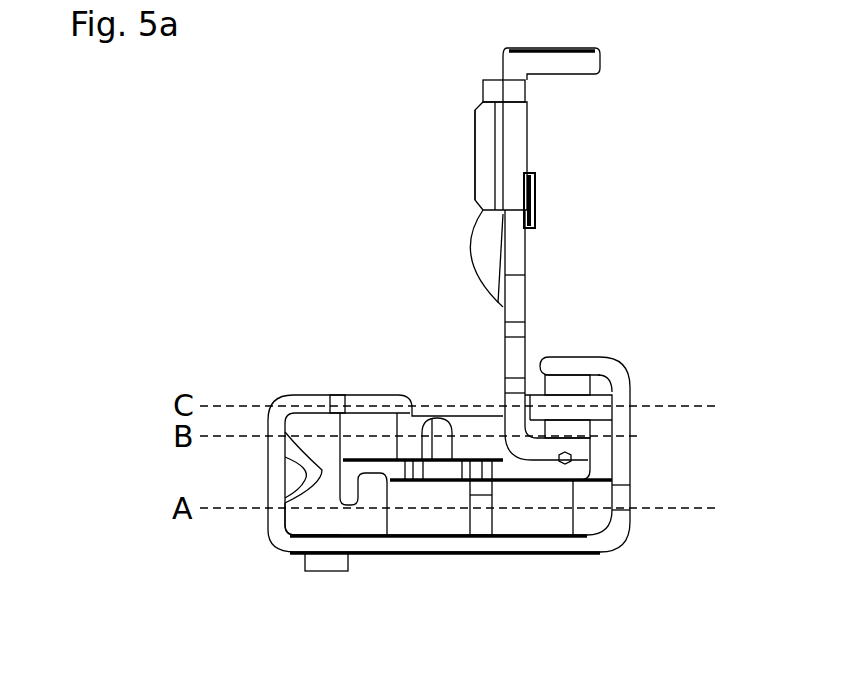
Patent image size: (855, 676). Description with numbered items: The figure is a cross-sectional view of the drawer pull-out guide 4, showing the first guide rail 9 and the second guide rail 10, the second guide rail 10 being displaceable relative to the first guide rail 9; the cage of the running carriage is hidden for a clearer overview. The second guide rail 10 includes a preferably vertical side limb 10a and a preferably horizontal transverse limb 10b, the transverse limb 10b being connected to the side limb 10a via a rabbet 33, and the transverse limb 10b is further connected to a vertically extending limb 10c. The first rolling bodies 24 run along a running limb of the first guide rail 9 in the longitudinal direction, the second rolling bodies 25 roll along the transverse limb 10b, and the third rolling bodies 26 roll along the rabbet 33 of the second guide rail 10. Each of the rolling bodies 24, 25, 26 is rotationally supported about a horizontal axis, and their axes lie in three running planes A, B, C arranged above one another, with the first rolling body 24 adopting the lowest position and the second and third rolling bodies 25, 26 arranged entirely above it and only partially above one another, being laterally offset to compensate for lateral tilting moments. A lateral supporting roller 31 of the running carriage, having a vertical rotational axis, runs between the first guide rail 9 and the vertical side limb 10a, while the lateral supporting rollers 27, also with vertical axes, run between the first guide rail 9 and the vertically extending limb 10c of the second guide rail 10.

The drawer pull-out guide 4 is at (316, 234).
The first guide rail 9 is at (630, 462).
The second guide rail 10 is at (532, 250).
The side limb 10a is at (524, 306).
The transverse limb 10b is at (455, 475).
The vertically extending limb 10c is at (353, 493).
The first rolling bodies 24 is at (525, 523).
The second rolling bodies 25 is at (350, 448).
The third rolling bodies 26 is at (578, 372).
The lateral supporting rollers 27 is at (322, 497).
The lateral supporting roller 31 is at (566, 392).
The rabbet 33 is at (580, 455).